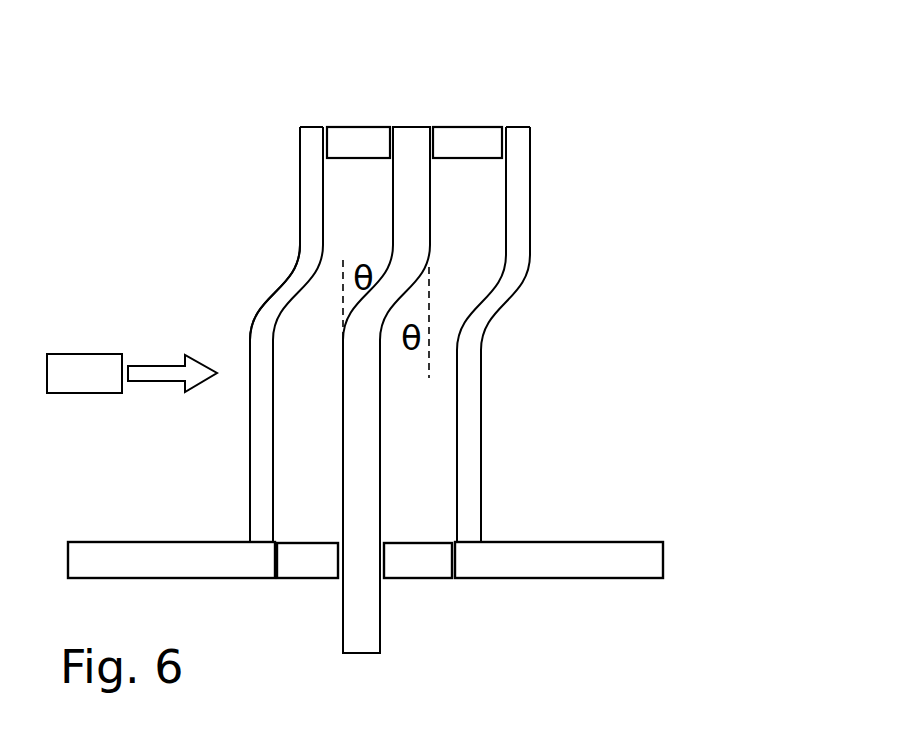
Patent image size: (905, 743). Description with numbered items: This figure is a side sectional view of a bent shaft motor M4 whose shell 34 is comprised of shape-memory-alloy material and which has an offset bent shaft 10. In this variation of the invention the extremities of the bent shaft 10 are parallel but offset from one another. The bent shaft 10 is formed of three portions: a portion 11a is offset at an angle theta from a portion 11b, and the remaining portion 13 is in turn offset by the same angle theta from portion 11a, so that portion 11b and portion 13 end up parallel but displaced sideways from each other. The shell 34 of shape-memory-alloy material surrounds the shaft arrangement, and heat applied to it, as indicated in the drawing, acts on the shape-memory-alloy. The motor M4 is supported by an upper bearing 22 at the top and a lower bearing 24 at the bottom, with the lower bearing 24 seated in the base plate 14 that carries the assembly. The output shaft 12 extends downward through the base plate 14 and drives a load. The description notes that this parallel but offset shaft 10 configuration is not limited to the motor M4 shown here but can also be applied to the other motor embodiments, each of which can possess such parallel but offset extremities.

The bent shaft 10 is at (418, 105).
The portion 11a is at (397, 283).
The portion 11b is at (413, 230).
The output shaft 12 is at (367, 595).
The remaining portion 13 is at (132, 406).
The base plate 14 is at (182, 560).
The upper bearing 22 is at (363, 142).
The lower bearing 24 is at (302, 560).
The shell 34 is at (305, 197).
The motor M4 is at (645, 247).